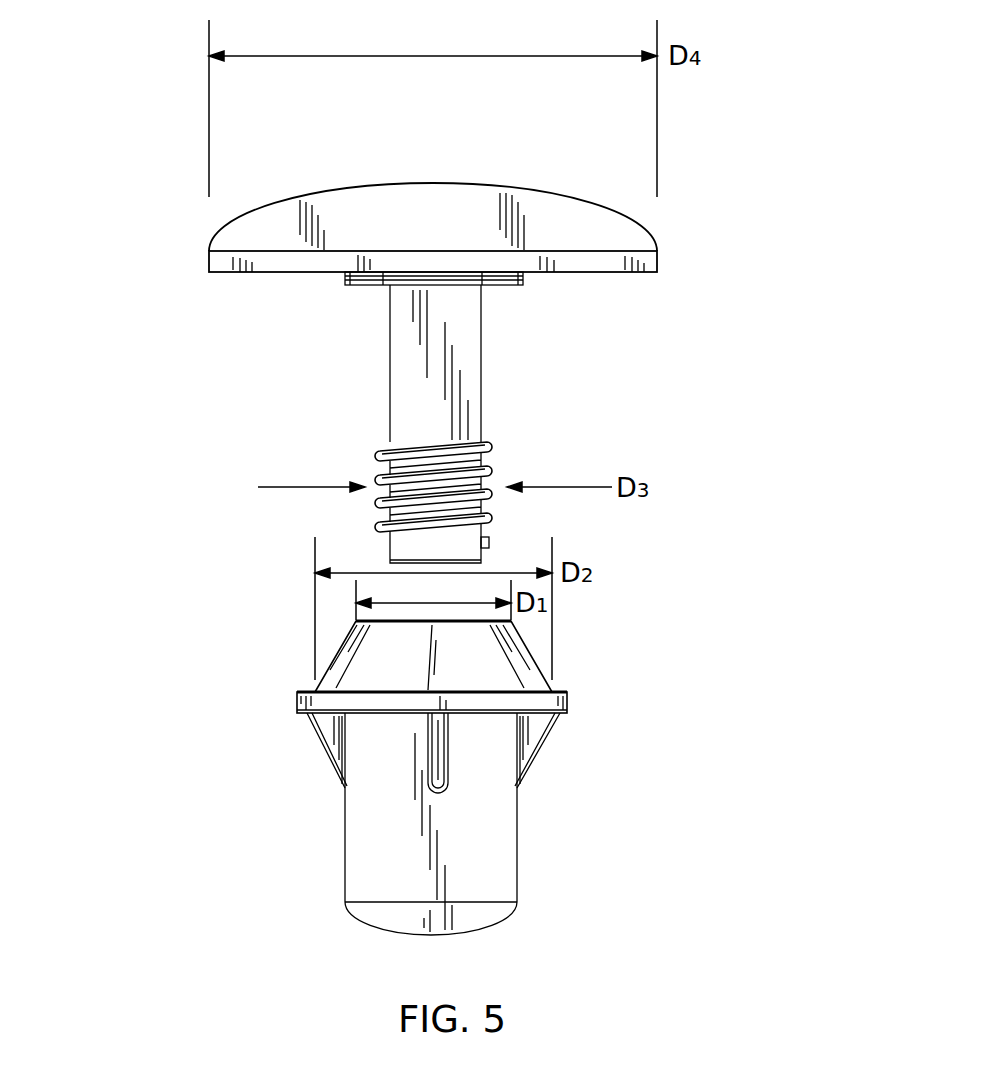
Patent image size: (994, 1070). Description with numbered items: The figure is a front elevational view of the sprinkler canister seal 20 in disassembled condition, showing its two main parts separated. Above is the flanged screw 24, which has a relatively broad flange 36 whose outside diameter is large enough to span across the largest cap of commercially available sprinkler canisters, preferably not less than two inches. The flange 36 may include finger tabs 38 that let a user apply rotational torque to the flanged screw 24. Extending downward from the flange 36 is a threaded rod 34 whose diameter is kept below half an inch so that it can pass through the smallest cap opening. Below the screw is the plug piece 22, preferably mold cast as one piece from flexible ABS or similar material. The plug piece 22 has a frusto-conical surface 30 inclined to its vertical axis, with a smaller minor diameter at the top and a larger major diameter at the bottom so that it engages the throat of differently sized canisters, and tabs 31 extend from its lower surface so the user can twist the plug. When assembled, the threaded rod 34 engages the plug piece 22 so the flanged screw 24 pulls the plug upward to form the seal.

The sprinkler canister seal 20 is at (124, 162).
The flanged screw 24 is at (690, 194).
The finger tabs 38 is at (546, 208).
The flange 36 is at (431, 262).
The threaded rod 34 is at (472, 391).
The plug piece 22 is at (655, 628).
The frusto-conical surface 30 is at (335, 655).
The tabs 31 is at (325, 740).